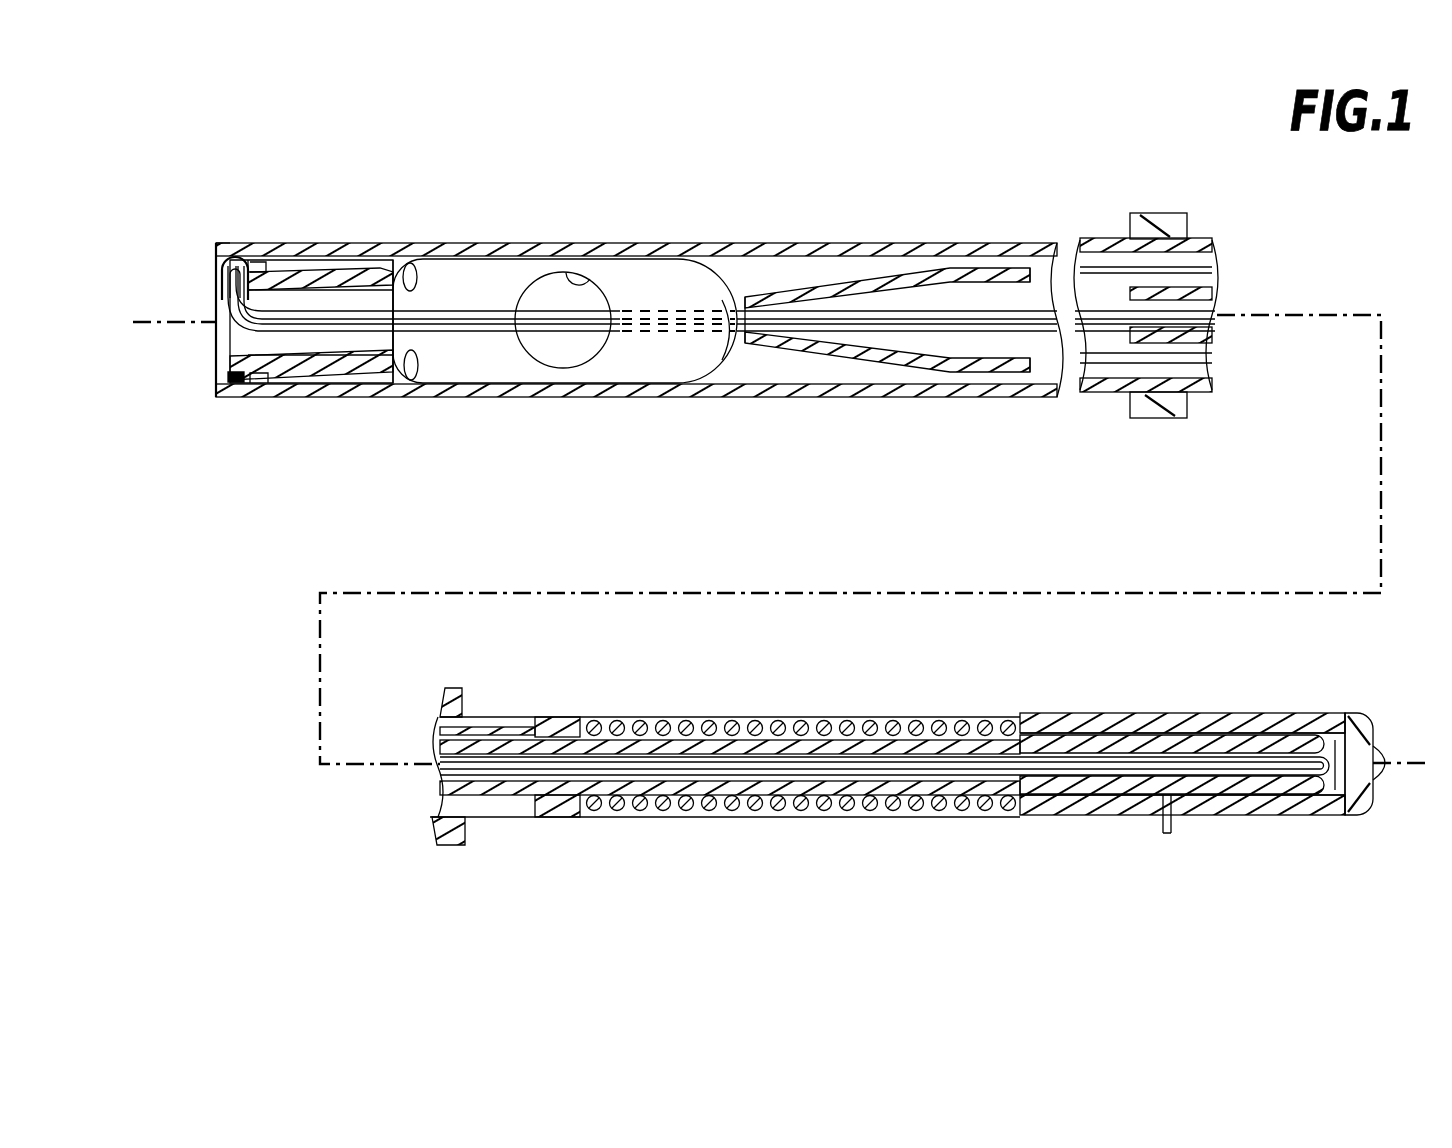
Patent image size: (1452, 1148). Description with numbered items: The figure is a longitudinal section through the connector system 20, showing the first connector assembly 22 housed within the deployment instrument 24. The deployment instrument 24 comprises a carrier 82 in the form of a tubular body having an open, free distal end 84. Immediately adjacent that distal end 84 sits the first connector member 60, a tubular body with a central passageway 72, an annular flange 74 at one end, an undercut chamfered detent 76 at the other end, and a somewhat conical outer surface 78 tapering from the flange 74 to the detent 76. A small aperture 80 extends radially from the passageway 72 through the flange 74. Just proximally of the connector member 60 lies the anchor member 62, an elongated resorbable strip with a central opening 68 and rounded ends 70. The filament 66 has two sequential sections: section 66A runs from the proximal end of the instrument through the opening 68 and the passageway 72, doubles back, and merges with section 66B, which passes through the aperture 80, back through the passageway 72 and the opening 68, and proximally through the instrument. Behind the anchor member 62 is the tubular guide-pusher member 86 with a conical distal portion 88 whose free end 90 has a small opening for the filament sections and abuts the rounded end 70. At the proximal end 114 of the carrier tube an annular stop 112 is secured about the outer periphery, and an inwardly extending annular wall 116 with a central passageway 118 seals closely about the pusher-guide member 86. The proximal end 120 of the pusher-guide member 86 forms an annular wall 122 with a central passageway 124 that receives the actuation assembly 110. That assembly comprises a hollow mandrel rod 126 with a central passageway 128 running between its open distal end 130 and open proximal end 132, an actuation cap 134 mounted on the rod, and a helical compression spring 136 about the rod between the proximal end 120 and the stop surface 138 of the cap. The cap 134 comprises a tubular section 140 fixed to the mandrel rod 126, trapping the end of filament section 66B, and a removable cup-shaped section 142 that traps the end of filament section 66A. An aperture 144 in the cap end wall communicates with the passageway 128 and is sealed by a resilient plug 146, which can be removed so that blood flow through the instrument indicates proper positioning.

The connector system 20 is at (632, 162).
The first connector assembly 22 is at (400, 278).
The deployment instrument 24 is at (838, 243).
The first connector member 60 is at (287, 372).
The anchor member 62 is at (671, 356).
The filament 66 is at (1025, 312).
The filament section 66A is at (486, 333).
The filament section 66B is at (492, 312).
The central opening 68 is at (590, 272).
The rounded end 70 is at (740, 298).
The central passageway 72 is at (240, 346).
The annular flange 74 is at (246, 380).
The detent 76 is at (396, 362).
The outer surface 78 is at (366, 370).
The aperture 80 is at (265, 265).
The carrier 82 is at (362, 255).
The open distal end 84 is at (216, 248).
The guide-pusher member 86 is at (975, 268).
The conical distal portion 88 is at (865, 282).
The free end 90 is at (736, 335).
The actuation assembly 110 is at (735, 728).
The stop 112 is at (1160, 226).
The proximal end 114 is at (466, 832).
The annular wall 116 is at (1205, 262).
The central passageway 118 is at (445, 842).
The proximal end 120 is at (592, 808).
The annular wall 122 is at (555, 818).
The central passageway 124 is at (568, 722).
The mandrel rod 126 is at (772, 802).
The central passageway 128 is at (853, 797).
The open distal end 130 is at (1115, 342).
The open proximal end 132 is at (1353, 716).
The actuation cap 134 is at (1250, 814).
The helical compression spring 136 is at (900, 724).
The stop surface 138 is at (1012, 810).
The tubular section 140 is at (1138, 806).
The cup-shaped section 142 is at (1305, 814).
The aperture 144 is at (1352, 800).
The plug 146 is at (1380, 770).